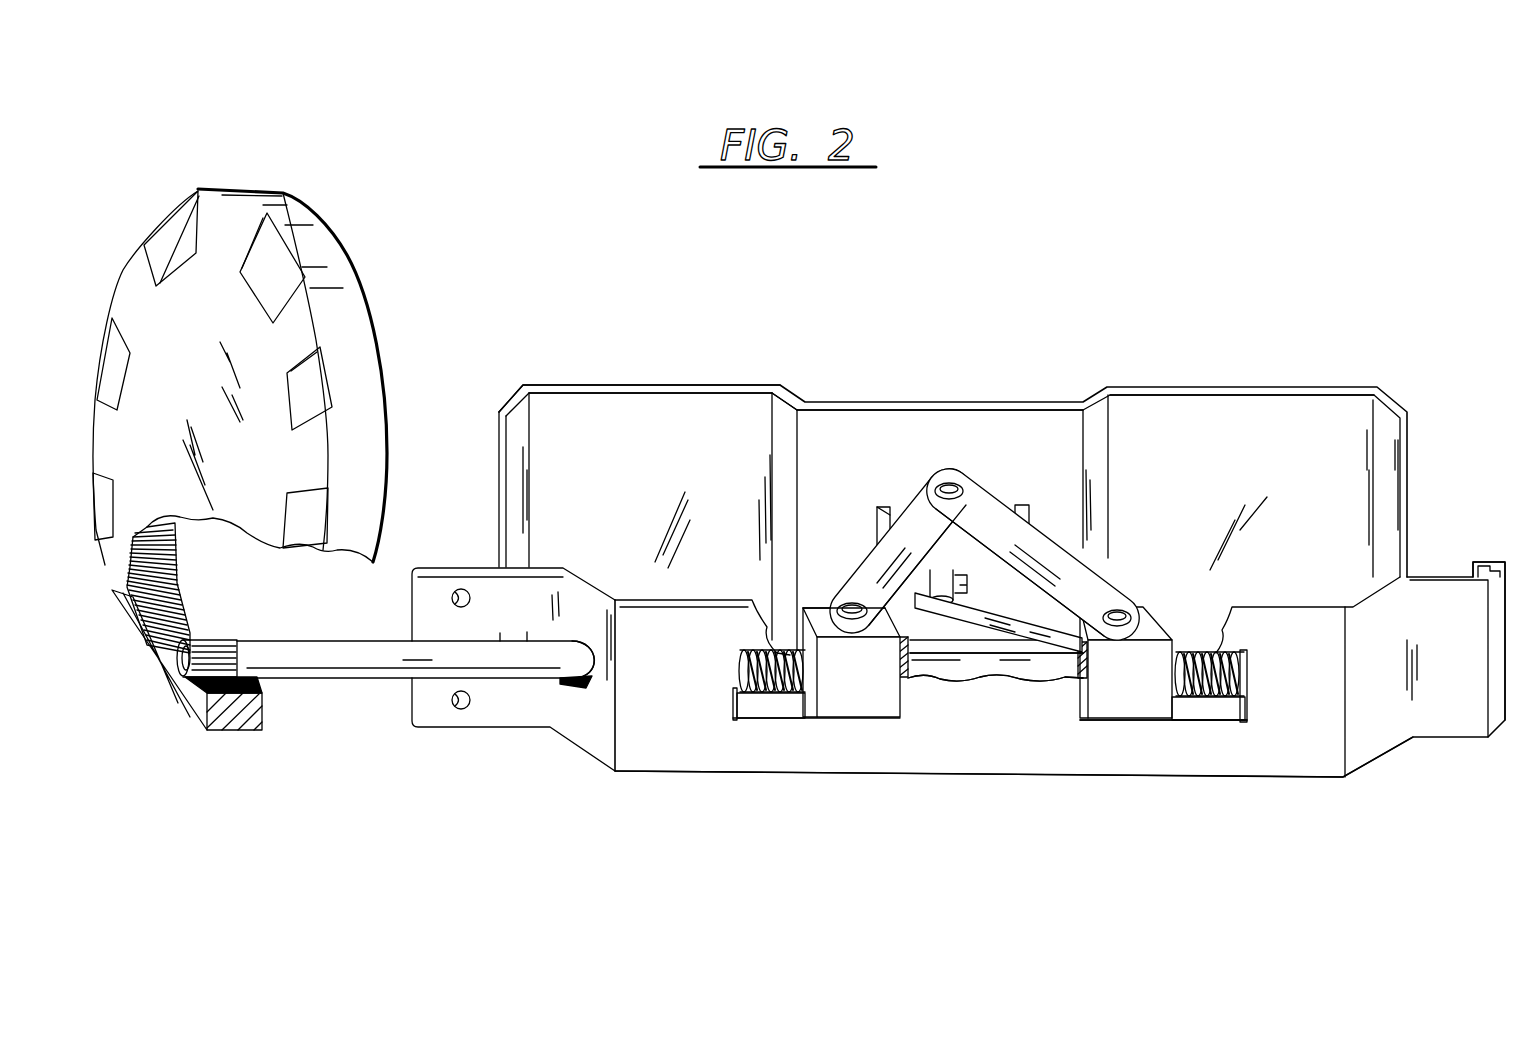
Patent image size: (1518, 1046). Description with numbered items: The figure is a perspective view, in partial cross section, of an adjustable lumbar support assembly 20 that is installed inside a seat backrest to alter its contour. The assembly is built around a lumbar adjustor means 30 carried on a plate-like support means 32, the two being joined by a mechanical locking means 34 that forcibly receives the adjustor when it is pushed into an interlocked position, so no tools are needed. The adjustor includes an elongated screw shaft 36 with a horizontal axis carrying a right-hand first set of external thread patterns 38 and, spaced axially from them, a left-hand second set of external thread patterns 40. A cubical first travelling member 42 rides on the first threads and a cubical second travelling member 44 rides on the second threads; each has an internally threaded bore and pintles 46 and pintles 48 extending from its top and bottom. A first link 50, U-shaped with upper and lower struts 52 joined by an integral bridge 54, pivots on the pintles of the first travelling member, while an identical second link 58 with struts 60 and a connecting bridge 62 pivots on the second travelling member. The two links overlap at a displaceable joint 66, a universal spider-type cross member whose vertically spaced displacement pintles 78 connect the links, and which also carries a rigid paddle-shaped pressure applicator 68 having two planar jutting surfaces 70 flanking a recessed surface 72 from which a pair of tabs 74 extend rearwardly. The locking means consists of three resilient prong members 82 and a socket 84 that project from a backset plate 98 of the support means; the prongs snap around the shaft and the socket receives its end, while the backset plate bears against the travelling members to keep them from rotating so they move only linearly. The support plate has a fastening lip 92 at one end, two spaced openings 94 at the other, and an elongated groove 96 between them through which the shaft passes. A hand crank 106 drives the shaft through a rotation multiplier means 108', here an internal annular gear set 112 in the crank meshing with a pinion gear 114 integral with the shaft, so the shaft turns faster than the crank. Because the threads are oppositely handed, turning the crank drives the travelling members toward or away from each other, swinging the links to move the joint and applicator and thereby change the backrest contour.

The adjustable lumbar support assembly 20 is at (993, 312).
The lumbar adjustor means 30 is at (1368, 390).
The support means 32 is at (1330, 779).
The mechanical locking means 34 is at (1050, 640).
The screw shaft 36 is at (367, 680).
The first set of external thread patterns 38 is at (758, 703).
The second set of external thread patterns 40 is at (1208, 722).
The first travelling member 42 is at (789, 707).
The second travelling member 44 is at (1188, 707).
The pintles 46 is at (849, 603).
The pintles 48 is at (1118, 610).
The first link 50 is at (805, 593).
The struts 52 is at (863, 567).
The bridge 54 is at (897, 610).
The second link 58 is at (1128, 603).
The struts 60 is at (1097, 595).
The connecting bridge 62 is at (1030, 620).
The displaceable joint 66 is at (957, 580).
The pressure applicator 68 is at (778, 385).
The jutting surfaces 70 is at (645, 385).
The recessed surface 72 is at (910, 402).
The tabs 74 is at (886, 525).
The displacement pintles 78 is at (948, 485).
The resilient prong members 82 is at (926, 664).
The socket 84 is at (1223, 697).
The fastening lip 92 is at (1494, 570).
The openings 94 is at (461, 589).
The groove 96 is at (561, 637).
The backset plate 98 is at (885, 750).
The hand crank 106 is at (330, 233).
The rotation multiplier means 108' is at (198, 588).
The internal annular gear set 112 is at (188, 614).
The pinion gear 114 is at (225, 638).